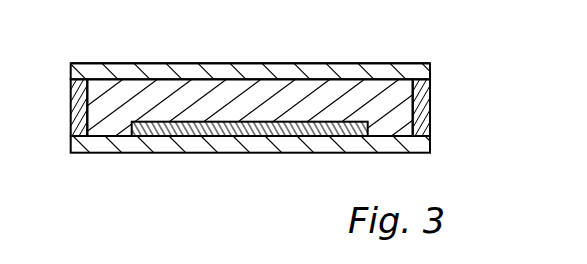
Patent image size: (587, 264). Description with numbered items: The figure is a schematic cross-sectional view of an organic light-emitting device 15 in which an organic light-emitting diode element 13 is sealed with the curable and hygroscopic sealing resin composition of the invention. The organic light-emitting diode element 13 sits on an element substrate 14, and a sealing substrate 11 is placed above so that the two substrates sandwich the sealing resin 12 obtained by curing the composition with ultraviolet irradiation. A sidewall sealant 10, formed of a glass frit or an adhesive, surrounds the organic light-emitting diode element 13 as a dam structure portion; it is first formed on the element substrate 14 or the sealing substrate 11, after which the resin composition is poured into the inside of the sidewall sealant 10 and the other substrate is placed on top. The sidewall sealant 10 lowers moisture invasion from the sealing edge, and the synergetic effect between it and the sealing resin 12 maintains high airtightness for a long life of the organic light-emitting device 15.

The sidewall sealant 10 is at (423, 108).
The sealing substrate 11 is at (420, 69).
The sealing resin 12 is at (392, 97).
The organic light-emitting diode element 13 is at (370, 127).
The element substrate 14 is at (423, 146).
The organic light-emitting device 15 is at (413, 65).